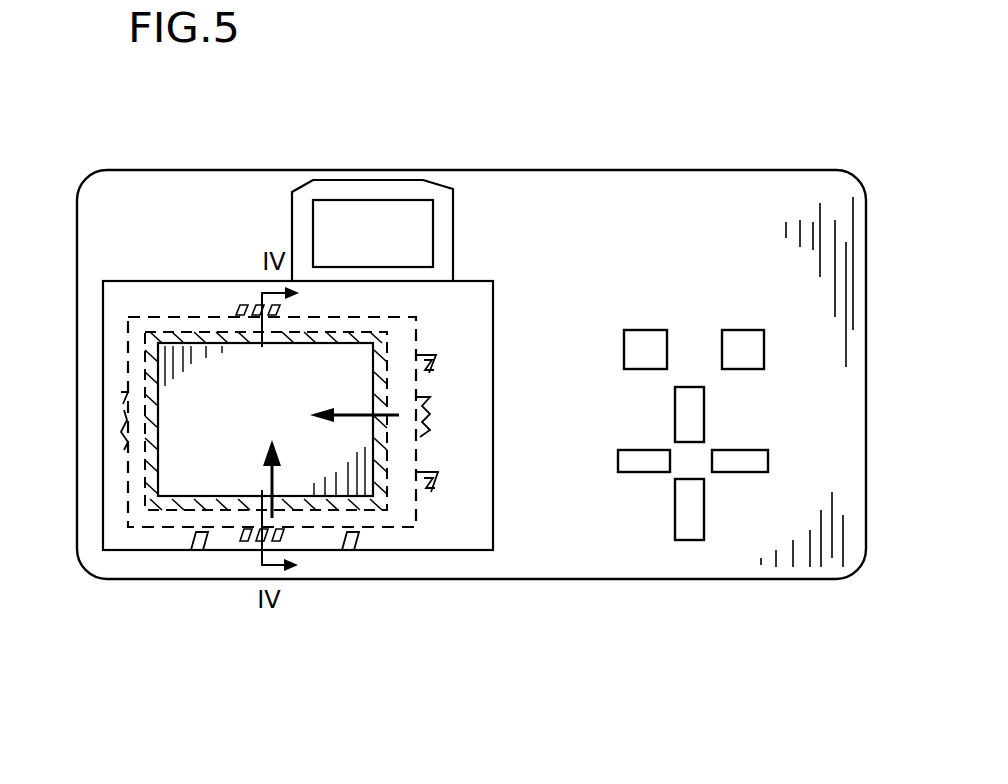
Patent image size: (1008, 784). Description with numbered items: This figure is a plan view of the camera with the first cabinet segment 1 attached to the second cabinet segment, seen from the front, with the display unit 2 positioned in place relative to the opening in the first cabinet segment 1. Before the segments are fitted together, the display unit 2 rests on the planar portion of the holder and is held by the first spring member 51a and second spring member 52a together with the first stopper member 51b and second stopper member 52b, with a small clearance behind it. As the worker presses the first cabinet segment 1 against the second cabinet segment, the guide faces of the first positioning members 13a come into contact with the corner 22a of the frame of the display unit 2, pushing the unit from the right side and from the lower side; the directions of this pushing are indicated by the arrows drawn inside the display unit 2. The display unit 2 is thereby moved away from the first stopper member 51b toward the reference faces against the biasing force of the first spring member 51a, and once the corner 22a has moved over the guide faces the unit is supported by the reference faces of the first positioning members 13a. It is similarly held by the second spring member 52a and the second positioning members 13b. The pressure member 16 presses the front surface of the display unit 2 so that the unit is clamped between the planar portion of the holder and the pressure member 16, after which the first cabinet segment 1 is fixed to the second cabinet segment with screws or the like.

The first cabinet segment 1 is at (752, 160).
The display unit 2 is at (396, 533).
The first positioning members 13a is at (198, 552).
The second positioning members 13b is at (440, 360).
The pressure member 16 is at (160, 336).
The corner of the frame 22a is at (137, 530).
The first spring member 51a is at (242, 302).
The first stopper member 51b is at (246, 550).
The second spring member 52a is at (121, 438).
The second stopper member 52b is at (440, 402).